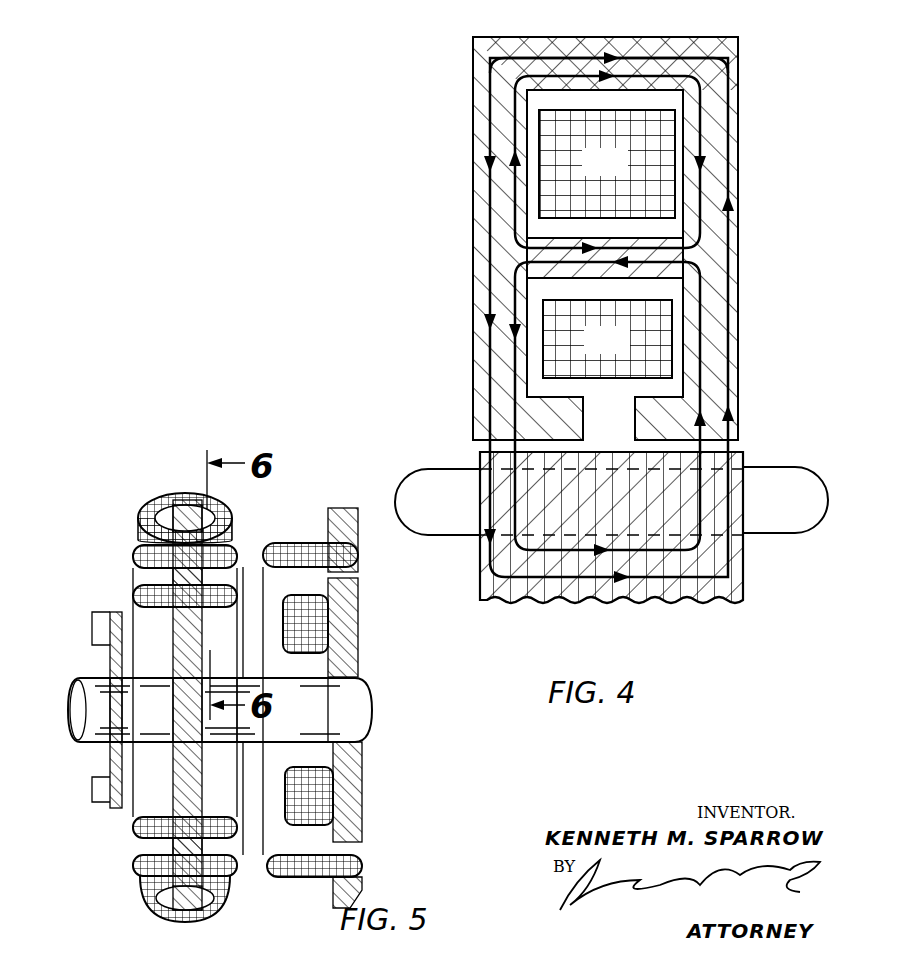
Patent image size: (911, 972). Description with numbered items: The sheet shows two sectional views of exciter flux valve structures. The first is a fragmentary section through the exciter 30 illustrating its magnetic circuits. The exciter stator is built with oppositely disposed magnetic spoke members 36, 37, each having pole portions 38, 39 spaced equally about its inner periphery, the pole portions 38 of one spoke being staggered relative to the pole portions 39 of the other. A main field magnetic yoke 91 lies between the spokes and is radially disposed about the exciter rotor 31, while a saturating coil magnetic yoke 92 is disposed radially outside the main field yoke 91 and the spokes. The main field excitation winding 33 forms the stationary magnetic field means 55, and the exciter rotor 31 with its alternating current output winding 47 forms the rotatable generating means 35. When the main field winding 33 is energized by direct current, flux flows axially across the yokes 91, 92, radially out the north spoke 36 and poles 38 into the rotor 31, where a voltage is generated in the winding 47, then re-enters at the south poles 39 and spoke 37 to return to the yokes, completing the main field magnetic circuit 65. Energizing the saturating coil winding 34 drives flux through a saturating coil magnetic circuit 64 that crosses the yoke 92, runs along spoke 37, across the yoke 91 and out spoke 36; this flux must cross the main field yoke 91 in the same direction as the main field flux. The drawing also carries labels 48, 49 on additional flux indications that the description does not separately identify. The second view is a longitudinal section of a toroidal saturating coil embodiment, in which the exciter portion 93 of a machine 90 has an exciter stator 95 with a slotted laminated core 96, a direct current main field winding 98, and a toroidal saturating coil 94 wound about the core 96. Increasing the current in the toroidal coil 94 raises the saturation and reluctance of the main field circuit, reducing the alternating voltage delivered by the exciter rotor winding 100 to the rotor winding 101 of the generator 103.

In FIG. 4, the exciter portion 30 is at (594, 224).
In FIG. 4, the saturating coil magnetic yoke 92 is at (630, 37).
In FIG. 4, the saturating coil magnetic circuit 64 is at (690, 135).
In FIG. 4, the saturating coil winding 34 is at (620, 174).
In FIG. 4, the main field magnetic yoke 91 is at (672, 232).
In FIG. 4, the magnetic spoke member 37 is at (738, 270).
In FIG. 4, the magnetic spoke member 36 is at (473, 286).
In FIG. 4, the main field excitation winding 33 is at (622, 352).
In FIG. 4, the stationary magnetic field means 55 is at (462, 396).
In FIG. 4, the pole portions 38 is at (565, 397).
In FIG. 4, the pole portions 39 is at (635, 445).
In FIG. 4, the alternating current output winding 47 is at (766, 474).
In FIG. 4, the rotatable generating means 35 is at (752, 580).
In FIG. 4, the flux path 48 is at (672, 580).
In FIG. 4, the flux path 49 is at (650, 585).
In FIG. 4, the main field magnetic circuit 65 is at (553, 600).
In FIG. 4, the exciter rotor 31 is at (482, 592).
In FIG. 5, the laminated core 96 is at (188, 500).
In FIG. 5, the exciter portion 93 is at (160, 485).
In FIG. 5, the toroidal saturating coil 94 is at (159, 505).
In FIG. 5, the exciter stator 95 is at (118, 555).
In FIG. 5, the direct current main field winding 98 is at (242, 550).
In FIG. 5, the generator 103 is at (296, 530).
In FIG. 5, the machine 90 is at (385, 716).
In FIG. 5, the exciter rotor winding 100 is at (140, 838).
In FIG. 5, the rotor winding 101 is at (300, 822).